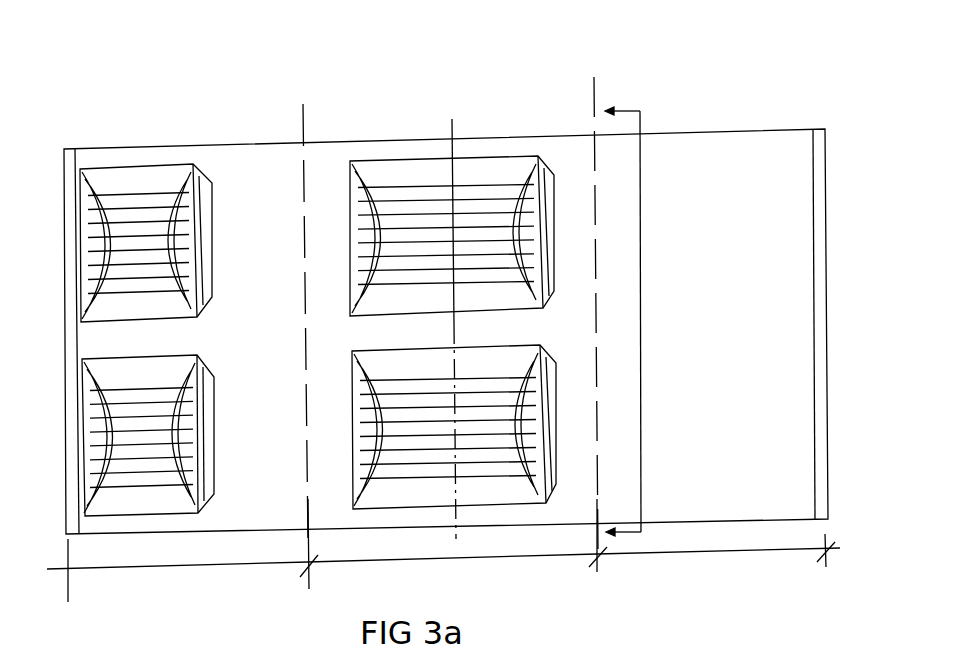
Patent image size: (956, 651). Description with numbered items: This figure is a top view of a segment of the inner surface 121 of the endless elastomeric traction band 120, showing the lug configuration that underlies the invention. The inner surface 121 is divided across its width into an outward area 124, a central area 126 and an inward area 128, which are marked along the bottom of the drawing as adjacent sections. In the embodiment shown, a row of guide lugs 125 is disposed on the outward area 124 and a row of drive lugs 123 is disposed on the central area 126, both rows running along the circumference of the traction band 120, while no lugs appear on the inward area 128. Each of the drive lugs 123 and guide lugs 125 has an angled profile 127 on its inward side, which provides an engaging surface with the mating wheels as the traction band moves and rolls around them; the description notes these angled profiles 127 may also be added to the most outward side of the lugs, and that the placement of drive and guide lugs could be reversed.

The endless elastomeric traction band 120 is at (824, 121).
The inner surface 121 is at (677, 176).
The drive lugs 123 is at (342, 328).
The outward area 124 is at (212, 565).
The guide lugs 125 is at (70, 343).
The central area 126 is at (516, 558).
The angled profile 127 is at (206, 371).
The inward area 128 is at (728, 559).